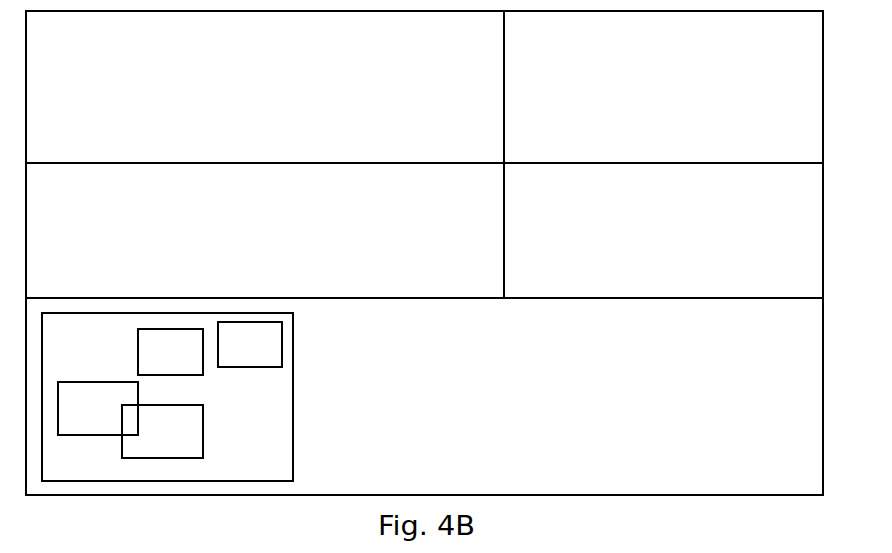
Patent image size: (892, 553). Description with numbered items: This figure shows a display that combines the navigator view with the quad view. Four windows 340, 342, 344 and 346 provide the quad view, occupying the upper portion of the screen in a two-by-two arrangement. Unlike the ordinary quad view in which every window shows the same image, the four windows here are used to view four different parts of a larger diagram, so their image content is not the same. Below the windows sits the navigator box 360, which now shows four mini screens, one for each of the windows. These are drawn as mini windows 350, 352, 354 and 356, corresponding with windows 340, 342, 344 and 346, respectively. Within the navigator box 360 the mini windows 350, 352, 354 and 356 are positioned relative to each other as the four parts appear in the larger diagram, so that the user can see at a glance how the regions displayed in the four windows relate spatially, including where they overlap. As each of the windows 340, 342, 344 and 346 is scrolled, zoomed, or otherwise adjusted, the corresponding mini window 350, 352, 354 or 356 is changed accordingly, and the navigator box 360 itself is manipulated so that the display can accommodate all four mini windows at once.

The window 340 is at (437, 54).
The window 342 is at (725, 54).
The window 344 is at (437, 206).
The window 346 is at (725, 206).
The mini window 350 is at (183, 364).
The mini window 352 is at (263, 356).
The mini window 354 is at (183, 447).
The mini window 356 is at (103, 414).
The navigator box 360 is at (293, 367).